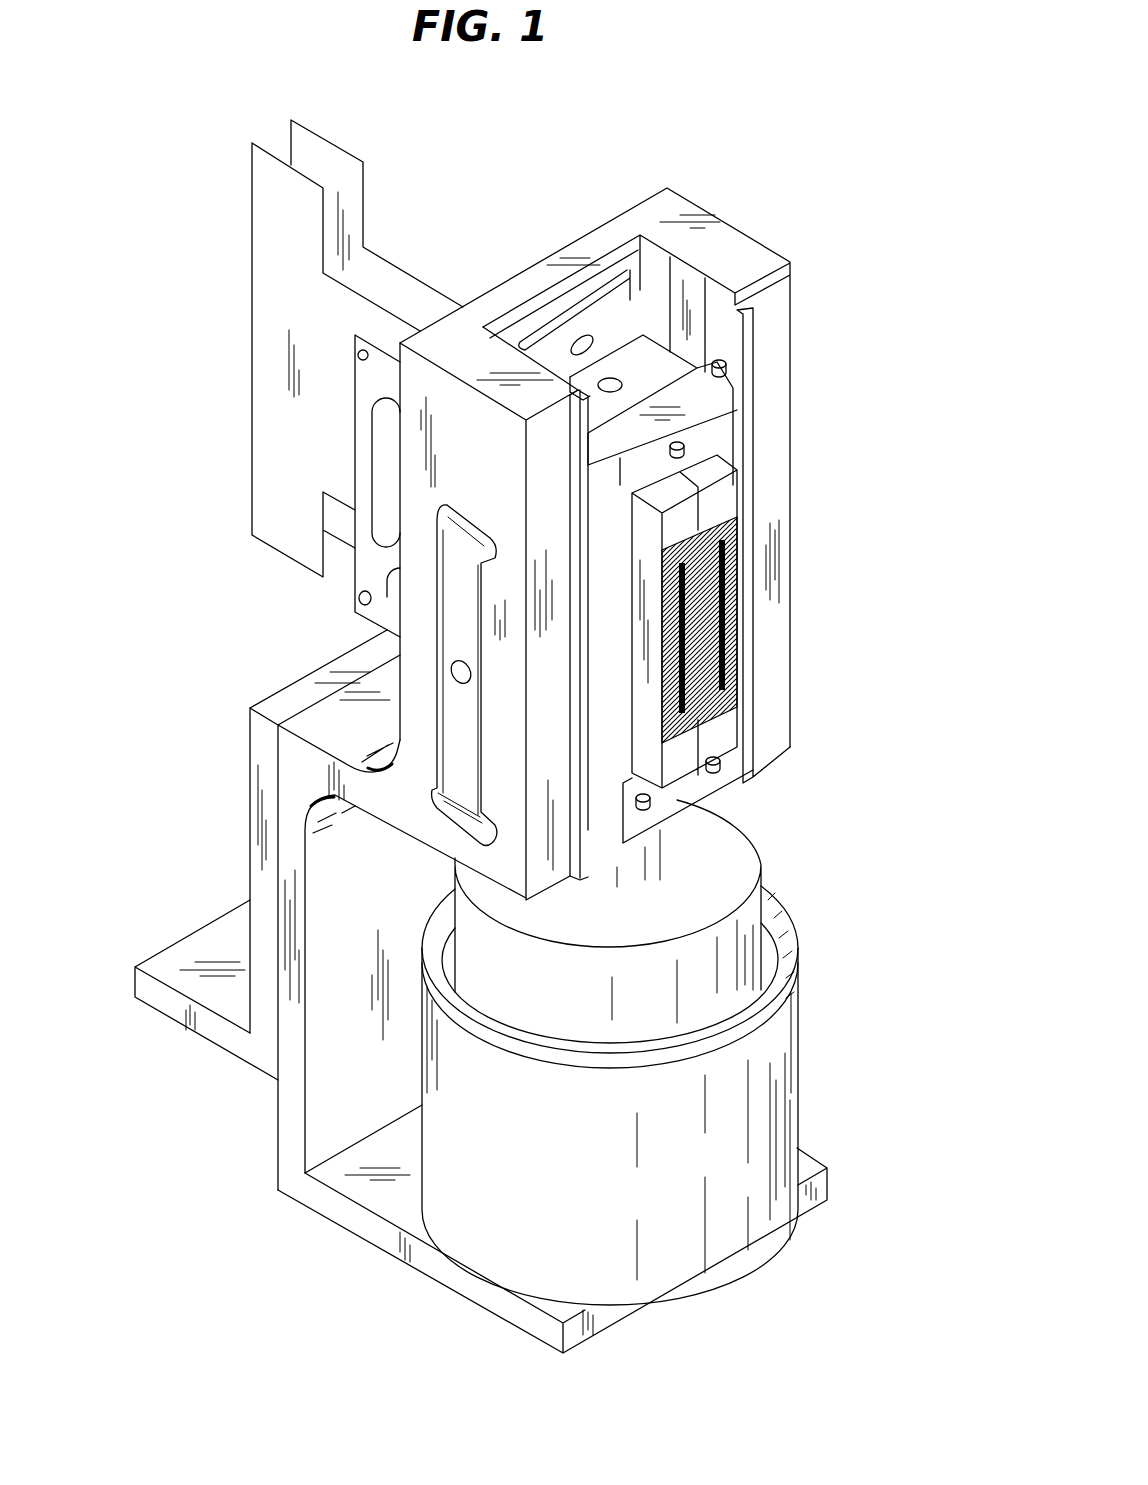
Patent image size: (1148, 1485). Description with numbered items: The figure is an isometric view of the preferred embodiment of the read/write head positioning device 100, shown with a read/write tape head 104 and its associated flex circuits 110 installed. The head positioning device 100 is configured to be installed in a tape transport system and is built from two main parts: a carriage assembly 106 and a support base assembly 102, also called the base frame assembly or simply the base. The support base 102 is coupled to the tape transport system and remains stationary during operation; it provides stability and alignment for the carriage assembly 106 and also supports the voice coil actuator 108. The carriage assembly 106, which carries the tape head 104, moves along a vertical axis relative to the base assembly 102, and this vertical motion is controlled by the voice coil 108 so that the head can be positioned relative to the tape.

The read/write head positioning device 100 is at (148, 1098).
The support base assembly 102 is at (226, 747).
The read/write tape head 104 is at (720, 502).
The carriage assembly 106 is at (820, 620).
The voice coil 108 is at (822, 1036).
The flex circuits 110 is at (340, 149).